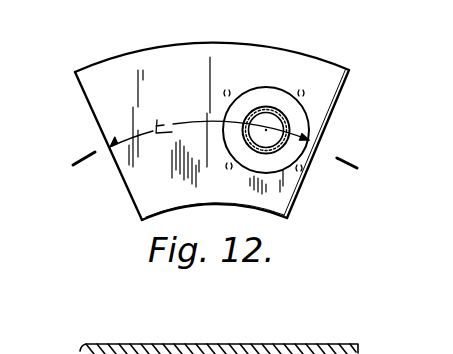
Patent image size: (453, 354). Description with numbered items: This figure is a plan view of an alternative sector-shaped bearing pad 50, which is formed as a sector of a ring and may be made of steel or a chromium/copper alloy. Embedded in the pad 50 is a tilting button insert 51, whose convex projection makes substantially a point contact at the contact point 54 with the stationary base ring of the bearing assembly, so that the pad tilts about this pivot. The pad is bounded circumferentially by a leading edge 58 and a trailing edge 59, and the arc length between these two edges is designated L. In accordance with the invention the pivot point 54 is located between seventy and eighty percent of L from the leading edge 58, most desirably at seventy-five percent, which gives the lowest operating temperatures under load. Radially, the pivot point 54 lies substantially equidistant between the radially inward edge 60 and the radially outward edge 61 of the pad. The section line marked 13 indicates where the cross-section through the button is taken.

The bearing pad 50 is at (204, 129).
The tilting button insert 51 is at (295, 111).
The contact point 54 is at (267, 128).
The leading edge 58 is at (90, 107).
The trailing edge 59 is at (331, 113).
The radially inward edge 60 is at (162, 213).
The radially outward edge 61 is at (198, 38).
The section line 13- 13 is at (92, 170).